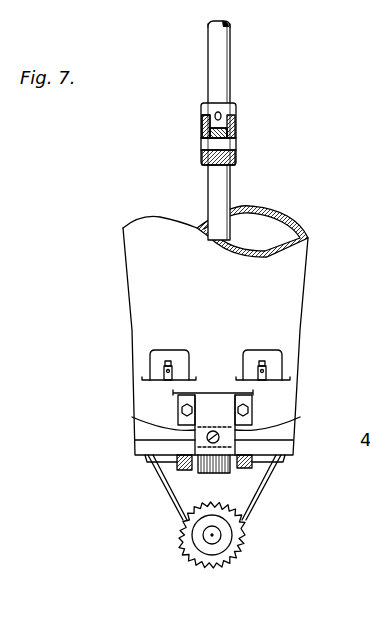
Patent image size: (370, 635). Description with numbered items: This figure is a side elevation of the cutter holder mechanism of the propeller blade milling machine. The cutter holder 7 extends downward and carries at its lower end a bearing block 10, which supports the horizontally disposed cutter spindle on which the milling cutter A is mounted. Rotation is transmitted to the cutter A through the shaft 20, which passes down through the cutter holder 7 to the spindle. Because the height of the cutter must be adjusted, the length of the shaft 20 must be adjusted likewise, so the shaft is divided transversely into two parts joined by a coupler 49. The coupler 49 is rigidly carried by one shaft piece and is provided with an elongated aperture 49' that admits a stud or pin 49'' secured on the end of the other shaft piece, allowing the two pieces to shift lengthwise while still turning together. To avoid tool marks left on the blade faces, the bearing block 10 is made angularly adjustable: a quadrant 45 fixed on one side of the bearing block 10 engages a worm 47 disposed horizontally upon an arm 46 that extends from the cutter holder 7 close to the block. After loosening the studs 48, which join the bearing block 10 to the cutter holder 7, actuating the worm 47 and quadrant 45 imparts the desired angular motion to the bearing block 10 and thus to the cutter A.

The shaft 20 is at (231, 76).
The coupler 49 is at (238, 135).
The elongated aperture 49' is at (245, 128).
The stud or pin 49'' is at (180, 144).
The cutter holder 7 is at (297, 260).
The studs 48 is at (150, 373).
The arm 46 is at (202, 415).
The quadrant 45 is at (175, 465).
The worm 47 is at (257, 462).
The bearing block 10 is at (248, 498).
The cutter A is at (207, 553).